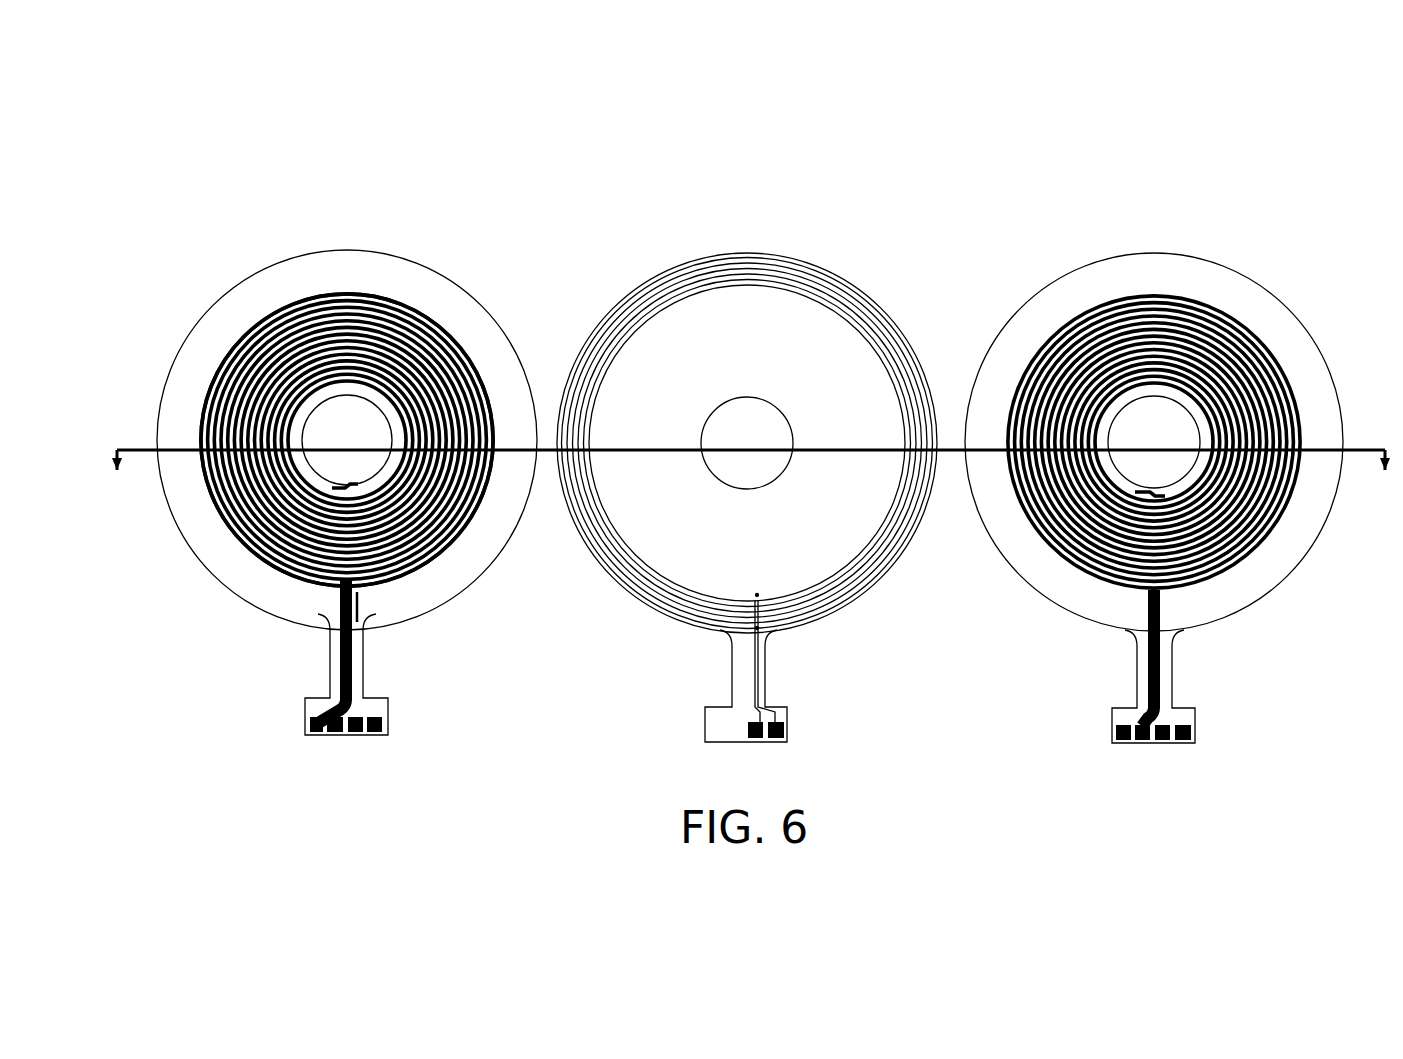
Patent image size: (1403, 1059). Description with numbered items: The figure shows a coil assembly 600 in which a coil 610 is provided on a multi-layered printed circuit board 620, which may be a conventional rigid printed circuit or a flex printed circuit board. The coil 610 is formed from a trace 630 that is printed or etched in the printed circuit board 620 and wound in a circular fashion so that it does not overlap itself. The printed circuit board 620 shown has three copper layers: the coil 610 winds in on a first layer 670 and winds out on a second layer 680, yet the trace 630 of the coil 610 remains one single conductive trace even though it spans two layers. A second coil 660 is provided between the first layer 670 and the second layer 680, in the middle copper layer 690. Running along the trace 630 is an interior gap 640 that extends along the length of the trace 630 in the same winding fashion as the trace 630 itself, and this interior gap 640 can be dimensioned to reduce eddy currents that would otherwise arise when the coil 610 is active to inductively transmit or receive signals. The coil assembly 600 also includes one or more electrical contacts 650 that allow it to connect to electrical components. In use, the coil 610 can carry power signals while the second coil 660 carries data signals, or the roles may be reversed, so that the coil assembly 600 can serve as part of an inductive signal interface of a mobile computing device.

The coil assembly 600 is at (751, 435).
The coil 610 is at (418, 298).
The printed circuit board 620 is at (407, 236).
The trace 630 is at (332, 620).
The interior gap 640 is at (449, 548).
The electrical contacts 650 is at (395, 730).
The second coil 660 is at (852, 598).
The first layer 670 is at (343, 456).
The second layer 680 is at (1252, 258).
The middle copper layer 690 is at (747, 450).